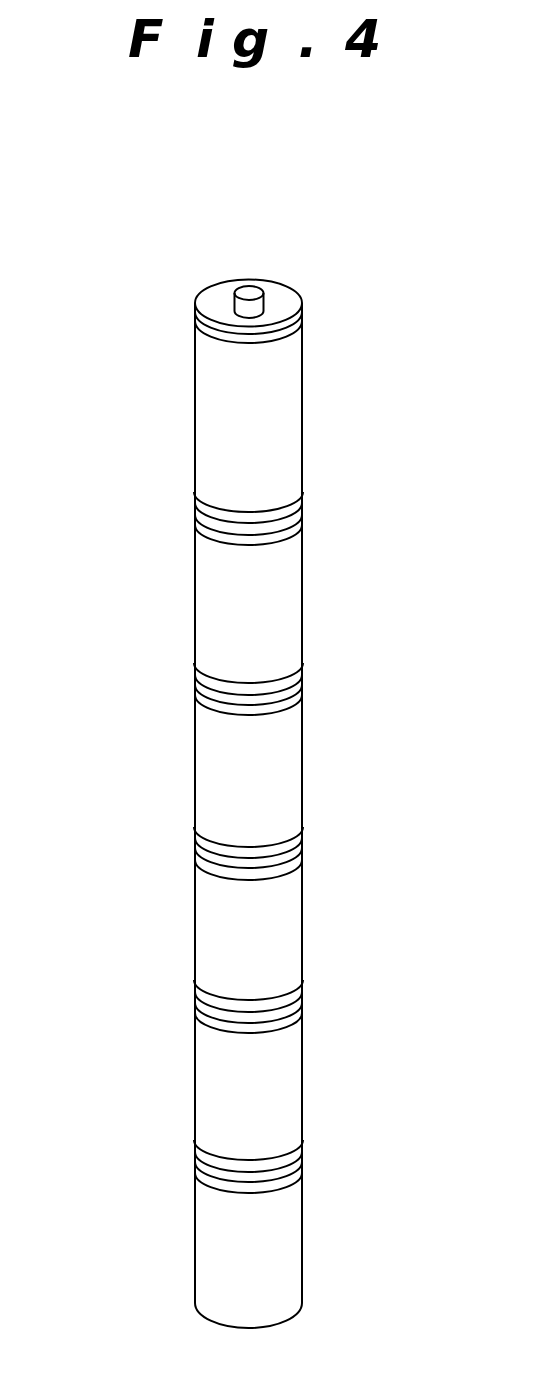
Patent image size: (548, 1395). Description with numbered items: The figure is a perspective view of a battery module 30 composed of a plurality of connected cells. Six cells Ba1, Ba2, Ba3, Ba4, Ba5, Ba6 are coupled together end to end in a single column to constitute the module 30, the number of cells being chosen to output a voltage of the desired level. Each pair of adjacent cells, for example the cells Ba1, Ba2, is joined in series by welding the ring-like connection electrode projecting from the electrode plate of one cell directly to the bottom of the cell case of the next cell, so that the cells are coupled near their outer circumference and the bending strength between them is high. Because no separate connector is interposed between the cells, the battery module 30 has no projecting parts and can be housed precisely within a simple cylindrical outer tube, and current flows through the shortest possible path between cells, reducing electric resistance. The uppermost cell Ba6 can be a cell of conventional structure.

The battery module 30 is at (255, 804).
The cell Ba1 is at (303, 1262).
The cell Ba2 is at (303, 1112).
The cell Ba3 is at (303, 952).
The cell Ba4 is at (303, 810).
The cell Ba5 is at (303, 640).
The cell Ba6 is at (303, 454).